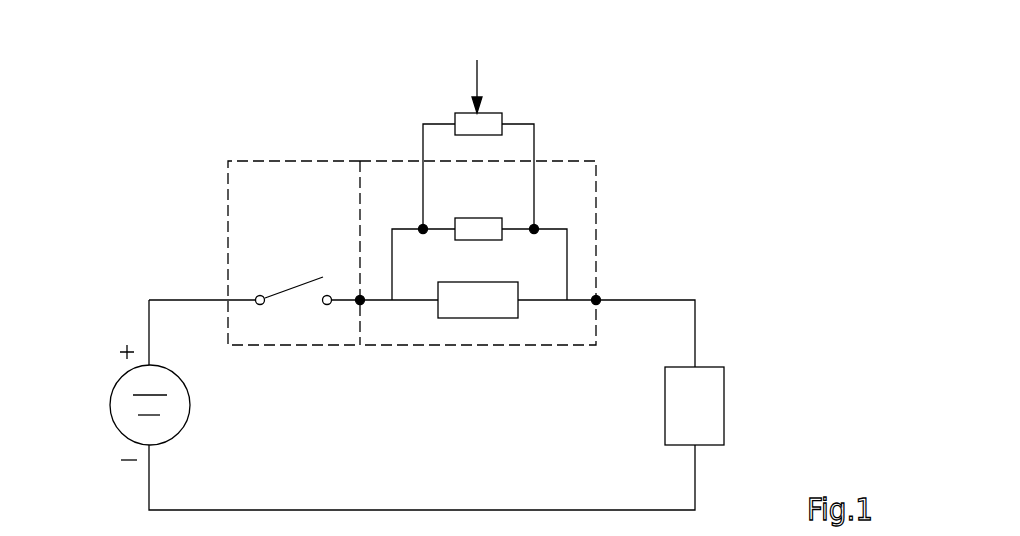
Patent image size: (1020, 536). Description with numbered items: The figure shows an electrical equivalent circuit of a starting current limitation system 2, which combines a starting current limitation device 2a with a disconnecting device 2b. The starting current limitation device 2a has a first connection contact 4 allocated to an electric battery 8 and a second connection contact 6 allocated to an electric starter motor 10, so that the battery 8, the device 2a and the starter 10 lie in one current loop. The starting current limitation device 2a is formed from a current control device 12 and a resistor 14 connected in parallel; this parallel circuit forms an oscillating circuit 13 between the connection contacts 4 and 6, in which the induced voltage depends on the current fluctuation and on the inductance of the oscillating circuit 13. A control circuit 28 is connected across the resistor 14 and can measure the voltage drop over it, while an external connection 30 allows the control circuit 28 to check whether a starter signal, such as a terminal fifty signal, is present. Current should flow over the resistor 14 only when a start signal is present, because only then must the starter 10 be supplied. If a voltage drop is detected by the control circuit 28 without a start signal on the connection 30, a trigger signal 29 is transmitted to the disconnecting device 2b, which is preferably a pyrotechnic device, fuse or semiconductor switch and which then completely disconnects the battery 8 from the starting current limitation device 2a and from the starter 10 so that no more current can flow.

The starting current limitation system 2 is at (344, 101).
The starting current limitation device 2a is at (573, 161).
The disconnecting device 2b is at (252, 161).
The first connection contact 4 is at (358, 302).
The second connection contact 6 is at (598, 302).
The electric battery 8 is at (110, 397).
The electric starter motor 10 is at (724, 388).
The current control device 12 is at (462, 319).
The oscillating circuit 13 is at (546, 258).
The resistor 14 is at (471, 218).
The control circuit 28 is at (464, 113).
The trigger signal 29 is at (294, 272).
The external connection 30 is at (476, 73).